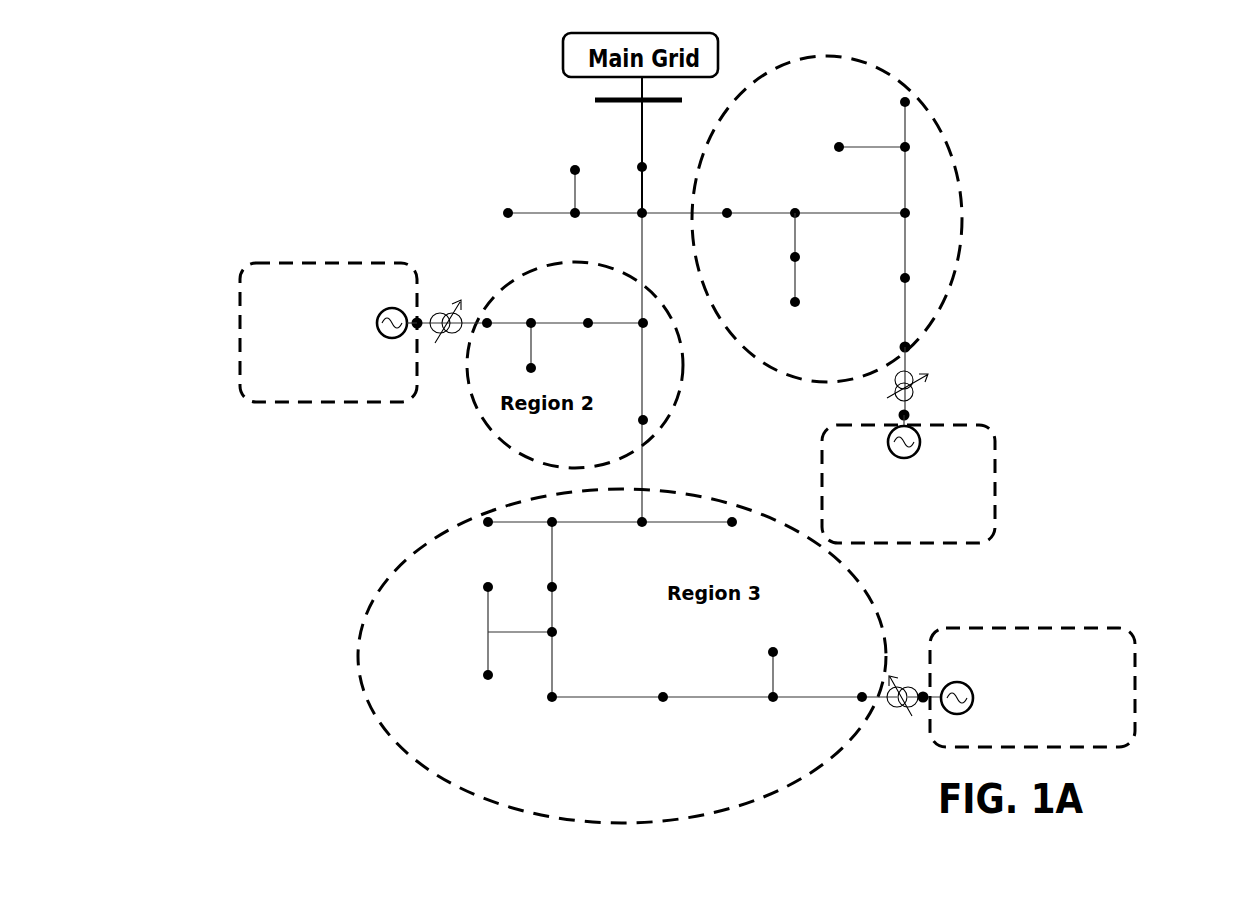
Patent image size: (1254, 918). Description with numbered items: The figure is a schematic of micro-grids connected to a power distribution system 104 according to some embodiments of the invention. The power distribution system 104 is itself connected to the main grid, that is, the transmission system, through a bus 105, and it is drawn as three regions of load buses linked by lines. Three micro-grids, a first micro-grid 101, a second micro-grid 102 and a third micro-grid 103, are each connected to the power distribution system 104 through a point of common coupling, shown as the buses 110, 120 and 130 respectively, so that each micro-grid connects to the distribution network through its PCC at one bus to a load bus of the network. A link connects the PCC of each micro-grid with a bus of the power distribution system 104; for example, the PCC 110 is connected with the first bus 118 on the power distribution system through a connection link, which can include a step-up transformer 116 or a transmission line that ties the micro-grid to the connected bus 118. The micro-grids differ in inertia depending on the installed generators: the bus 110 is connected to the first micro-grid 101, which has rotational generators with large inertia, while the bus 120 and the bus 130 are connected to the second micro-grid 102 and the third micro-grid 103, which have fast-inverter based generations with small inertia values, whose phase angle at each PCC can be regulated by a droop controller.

The micro-grid 1 101 is at (995, 522).
The micro-grid 2 102 is at (335, 262).
The micro-grid 3 103 is at (1135, 640).
The power distribution system 104 is at (958, 172).
The bus 105 is at (618, 103).
The point of common coupling bus 110 is at (905, 415).
The step-up transformer 116 is at (916, 396).
The connected bus 118 is at (905, 346).
The point of common coupling bus 120 is at (418, 322).
The point of common coupling bus 130 is at (923, 702).